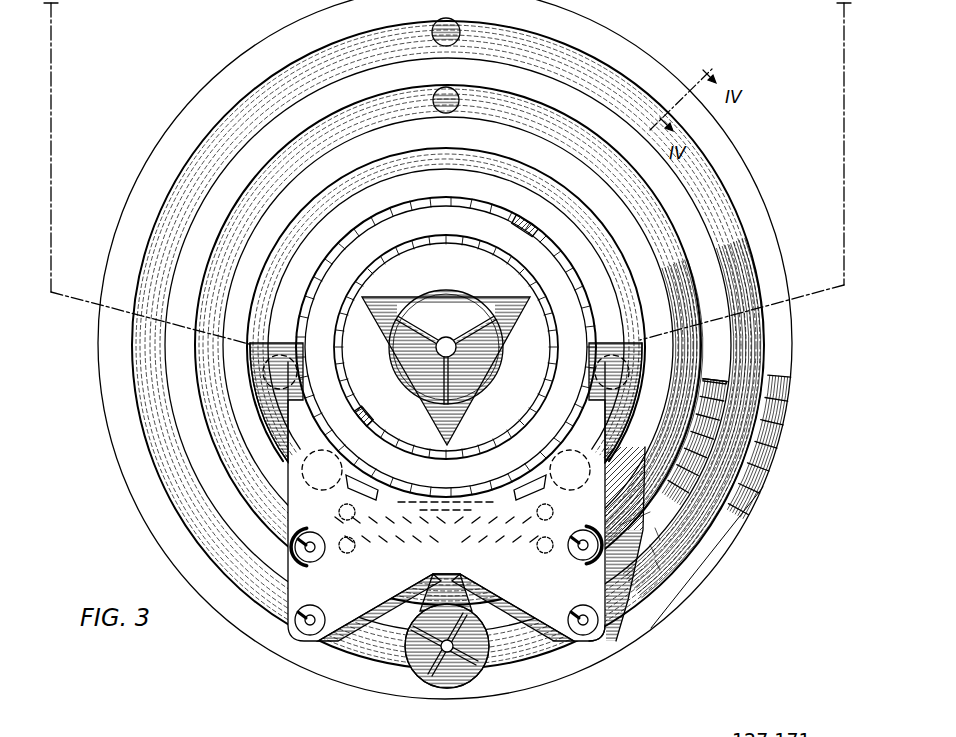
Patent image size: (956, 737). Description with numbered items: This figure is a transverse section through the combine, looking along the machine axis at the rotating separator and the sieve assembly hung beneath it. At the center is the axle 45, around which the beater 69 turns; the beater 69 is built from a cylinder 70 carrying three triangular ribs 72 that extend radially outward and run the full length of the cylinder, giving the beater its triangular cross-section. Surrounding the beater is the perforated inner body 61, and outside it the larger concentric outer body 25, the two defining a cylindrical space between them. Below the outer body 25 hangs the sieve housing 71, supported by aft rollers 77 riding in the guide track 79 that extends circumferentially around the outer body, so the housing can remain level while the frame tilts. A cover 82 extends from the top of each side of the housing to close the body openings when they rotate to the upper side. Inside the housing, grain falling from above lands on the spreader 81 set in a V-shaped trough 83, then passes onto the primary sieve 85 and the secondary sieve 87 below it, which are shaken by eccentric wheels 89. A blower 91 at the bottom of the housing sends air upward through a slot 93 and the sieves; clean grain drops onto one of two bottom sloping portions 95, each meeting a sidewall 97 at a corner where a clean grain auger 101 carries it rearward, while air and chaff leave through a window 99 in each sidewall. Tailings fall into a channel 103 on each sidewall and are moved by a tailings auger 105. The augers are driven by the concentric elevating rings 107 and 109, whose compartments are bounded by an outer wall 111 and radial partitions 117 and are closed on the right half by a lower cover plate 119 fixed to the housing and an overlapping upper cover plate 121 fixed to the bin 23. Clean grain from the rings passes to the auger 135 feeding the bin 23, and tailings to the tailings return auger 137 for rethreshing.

The bin 23 is at (844, 106).
The outer body 25 is at (513, 222).
The axle 45 is at (690, 178).
The inner body 61 is at (692, 208).
The beater 69 is at (512, 290).
The cylinder 70 is at (390, 355).
The sieve housing 71 is at (287, 605).
The triangular ribs 72 is at (363, 315).
The aft rollers 77 is at (250, 383).
The guide track 79 is at (267, 419).
The spreader 81 is at (464, 474).
The cover 82 is at (590, 178).
The V-shaped trough 83 is at (345, 497).
The primary sieve 85 is at (425, 520).
The secondary sieve 87 is at (356, 548).
The eccentric wheels 89 is at (622, 525).
The blower 91 is at (483, 675).
The slot 93 is at (418, 672).
The bottom sloping portions 95 is at (537, 642).
The sidewall 97 is at (665, 575).
The window 99 is at (655, 528).
The clean grain auger 101 is at (593, 630).
The channel 103 is at (655, 560).
The tailings auger 105 is at (650, 545).
The elevating ring 107 is at (630, 637).
The elevating ring 109 is at (717, 372).
The outer wall 111 is at (782, 420).
The radial partitions 117 is at (745, 465).
The lower cover plate 119 is at (637, 612).
The upper cover plate 121 is at (766, 388).
The auger 135 is at (460, 30).
The tailings return auger 137 is at (459, 97).